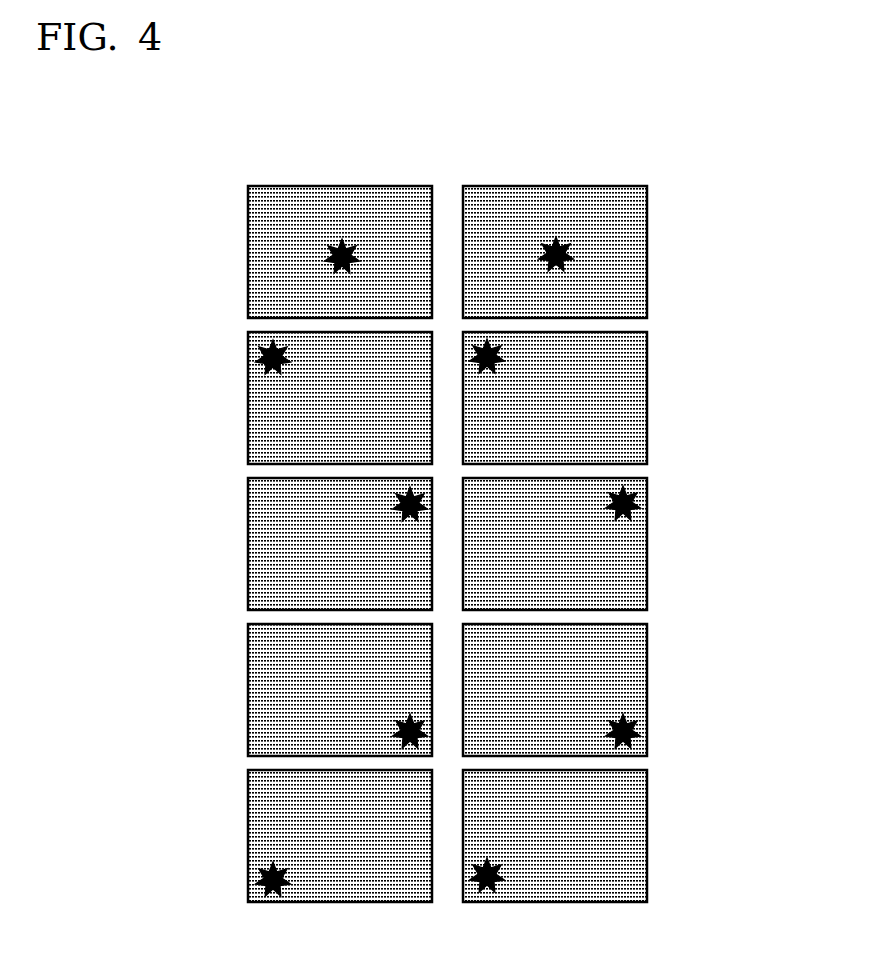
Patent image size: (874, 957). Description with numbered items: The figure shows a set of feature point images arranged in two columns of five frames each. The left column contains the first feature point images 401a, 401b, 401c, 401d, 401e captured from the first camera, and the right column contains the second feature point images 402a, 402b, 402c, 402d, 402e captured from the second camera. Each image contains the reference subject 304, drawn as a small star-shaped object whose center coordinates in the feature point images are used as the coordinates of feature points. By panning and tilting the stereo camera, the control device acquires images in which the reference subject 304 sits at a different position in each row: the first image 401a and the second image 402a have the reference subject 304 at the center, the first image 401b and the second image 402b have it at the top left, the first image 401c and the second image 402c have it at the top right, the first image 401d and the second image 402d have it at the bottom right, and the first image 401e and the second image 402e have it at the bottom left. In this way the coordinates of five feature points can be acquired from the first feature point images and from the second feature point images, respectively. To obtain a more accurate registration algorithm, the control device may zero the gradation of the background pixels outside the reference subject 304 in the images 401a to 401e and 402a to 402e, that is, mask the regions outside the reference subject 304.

The reference subject 304 is at (334, 247).
The first feature point image 401a is at (250, 252).
The first feature point image 401b is at (250, 398).
The first feature point image 401c is at (250, 546).
The first feature point image 401d is at (250, 692).
The first feature point image 401e is at (250, 840).
The second feature point image 402a is at (647, 252).
The second feature point image 402b is at (647, 399).
The second feature point image 402c is at (647, 547).
The second feature point image 402d is at (647, 690).
The second feature point image 402e is at (647, 838).